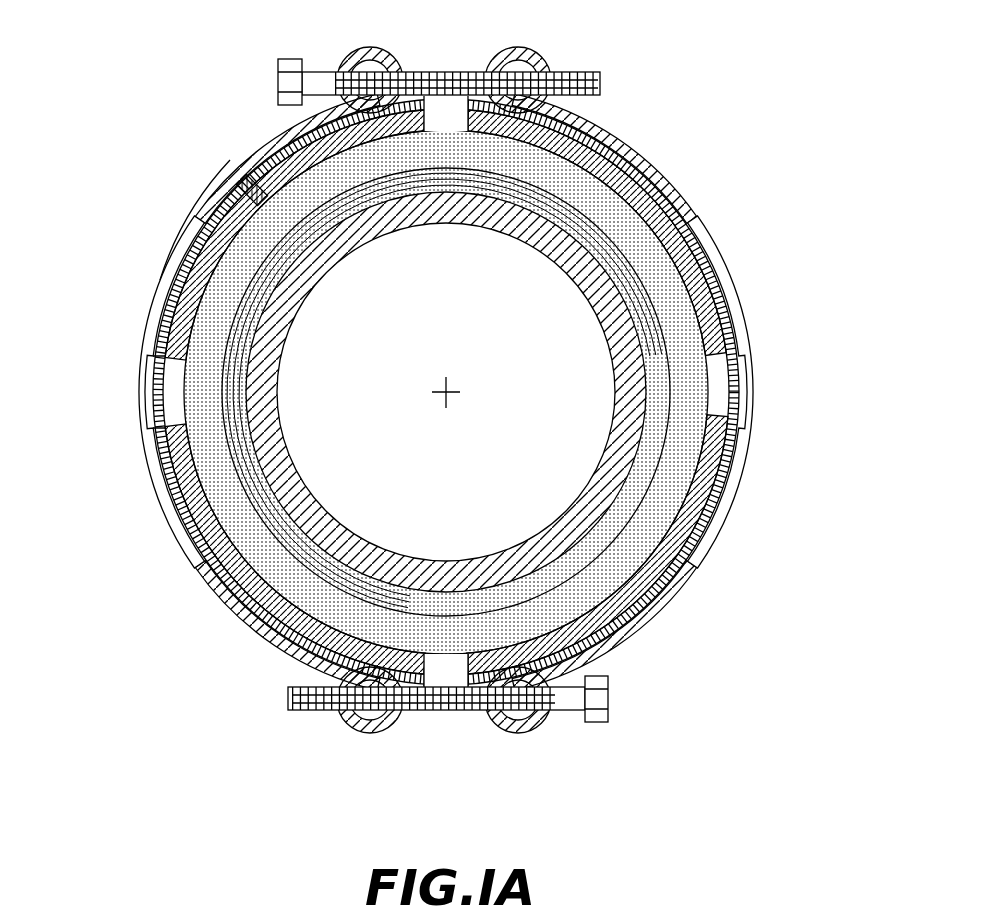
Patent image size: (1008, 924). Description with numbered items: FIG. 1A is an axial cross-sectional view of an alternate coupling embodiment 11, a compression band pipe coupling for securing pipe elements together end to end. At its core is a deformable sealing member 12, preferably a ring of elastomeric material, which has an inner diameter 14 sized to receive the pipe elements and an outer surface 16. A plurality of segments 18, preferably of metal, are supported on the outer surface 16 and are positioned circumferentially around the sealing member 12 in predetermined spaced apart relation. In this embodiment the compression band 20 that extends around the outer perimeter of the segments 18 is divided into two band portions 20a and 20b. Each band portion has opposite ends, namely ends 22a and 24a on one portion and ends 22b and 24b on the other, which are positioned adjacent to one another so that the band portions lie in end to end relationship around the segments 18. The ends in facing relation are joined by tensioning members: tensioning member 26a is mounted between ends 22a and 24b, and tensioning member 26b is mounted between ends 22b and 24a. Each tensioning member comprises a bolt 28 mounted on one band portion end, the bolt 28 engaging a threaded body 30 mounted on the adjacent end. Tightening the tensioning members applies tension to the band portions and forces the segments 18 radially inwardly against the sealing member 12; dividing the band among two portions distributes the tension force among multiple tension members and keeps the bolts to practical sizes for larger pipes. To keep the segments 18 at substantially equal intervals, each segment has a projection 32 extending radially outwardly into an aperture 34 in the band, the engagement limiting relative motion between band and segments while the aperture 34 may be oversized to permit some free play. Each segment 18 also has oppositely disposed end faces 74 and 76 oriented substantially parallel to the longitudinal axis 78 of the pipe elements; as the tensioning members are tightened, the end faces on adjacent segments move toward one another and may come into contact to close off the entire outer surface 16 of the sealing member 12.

The alternate coupling embodiment 11 is at (720, 193).
The sealing member 12 is at (665, 272).
The inner diameter 14 is at (583, 560).
The outer surface 16 is at (713, 396).
The segments 18 is at (167, 323).
The compression band 20 is at (470, 392).
The band portion 20a is at (163, 452).
The band portion 20b is at (733, 312).
The band portion end 22a is at (350, 62).
The band portion end 22b is at (530, 722).
The band portion end 24a is at (362, 722).
The band portion end 24b is at (552, 62).
The tensioning member 26a is at (453, 130).
The tensioning member 26b is at (455, 672).
The bolt 28 is at (603, 80).
The threaded body 30 is at (500, 56).
The projection 32 is at (217, 192).
The aperture 34 is at (247, 180).
The end face 74 is at (148, 365).
The end face 76 is at (437, 130).
The longitudinal axis 78 is at (440, 396).